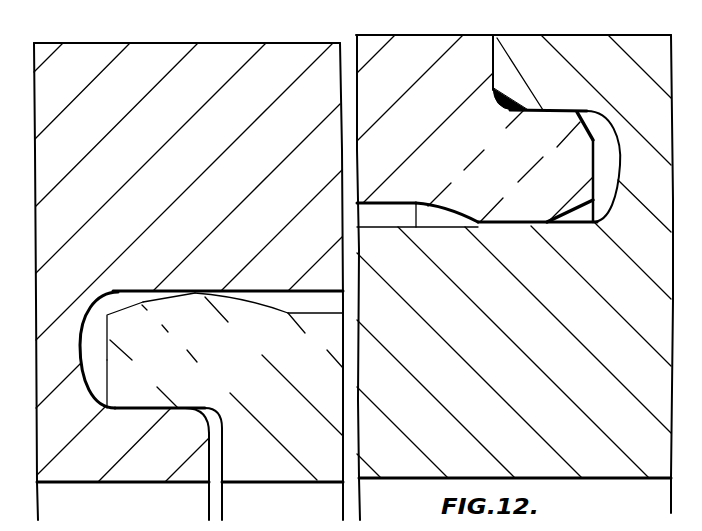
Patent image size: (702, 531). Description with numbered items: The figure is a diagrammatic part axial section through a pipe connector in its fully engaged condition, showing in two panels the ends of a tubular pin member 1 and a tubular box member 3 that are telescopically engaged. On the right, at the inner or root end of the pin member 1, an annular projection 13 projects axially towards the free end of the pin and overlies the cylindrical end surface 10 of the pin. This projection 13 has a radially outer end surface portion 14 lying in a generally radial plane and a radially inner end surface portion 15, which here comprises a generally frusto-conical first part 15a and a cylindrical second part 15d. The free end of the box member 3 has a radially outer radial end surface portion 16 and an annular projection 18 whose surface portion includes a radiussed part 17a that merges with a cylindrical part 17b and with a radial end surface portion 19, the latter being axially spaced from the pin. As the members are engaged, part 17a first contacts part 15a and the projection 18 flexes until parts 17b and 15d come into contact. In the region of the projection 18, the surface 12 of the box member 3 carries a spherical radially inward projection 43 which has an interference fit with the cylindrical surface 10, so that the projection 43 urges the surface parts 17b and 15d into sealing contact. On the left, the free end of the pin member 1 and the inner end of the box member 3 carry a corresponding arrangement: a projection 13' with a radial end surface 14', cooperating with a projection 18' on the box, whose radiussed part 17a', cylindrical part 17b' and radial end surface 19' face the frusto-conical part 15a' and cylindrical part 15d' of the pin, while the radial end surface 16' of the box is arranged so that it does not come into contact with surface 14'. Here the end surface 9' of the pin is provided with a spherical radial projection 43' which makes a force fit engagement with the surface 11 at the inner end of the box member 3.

The pin member 1 is at (297, 425).
The box member 3 is at (68, 428).
The annular end surface portion of pin member 10 is at (374, 230).
The annular end surface portion of box member 11 is at (330, 290).
The annular end surface portion of box member 12 is at (386, 203).
The annular projection 13 is at (582, 28).
The first radially outer end surface portion 14 is at (517, 50).
The second radially inner end surface portion 15 is at (541, 110).
The first frusto-conical surface part 15a is at (524, 84).
The cylindrical surface part 15d is at (601, 148).
The first radially outer end surface portion of box member 16 is at (424, 36).
The radiussed surface part 17a is at (560, 167).
The cylindrical surface part 17b is at (527, 132).
The annular projection of box member 18 is at (512, 166).
The radial end surface portion 19 is at (568, 199).
The spherical radially inward projection 43 is at (447, 194).
The ledge face 9' is at (315, 333).
The annular projection at free end of pin member 13' is at (123, 465).
The first end surface portion 14' is at (188, 478).
The fillet 15a' is at (183, 436).
The groove wall 15d' is at (112, 377).
The first end surface portion of box member inner end 16' is at (274, 465).
The sealing lip 17a' is at (139, 384).
The sealing lip 17b' is at (209, 386).
The annular projection at inner end of box member 18' is at (175, 319).
The sealing lip 19' is at (131, 331).
The spherical radial projection 43' is at (241, 324).